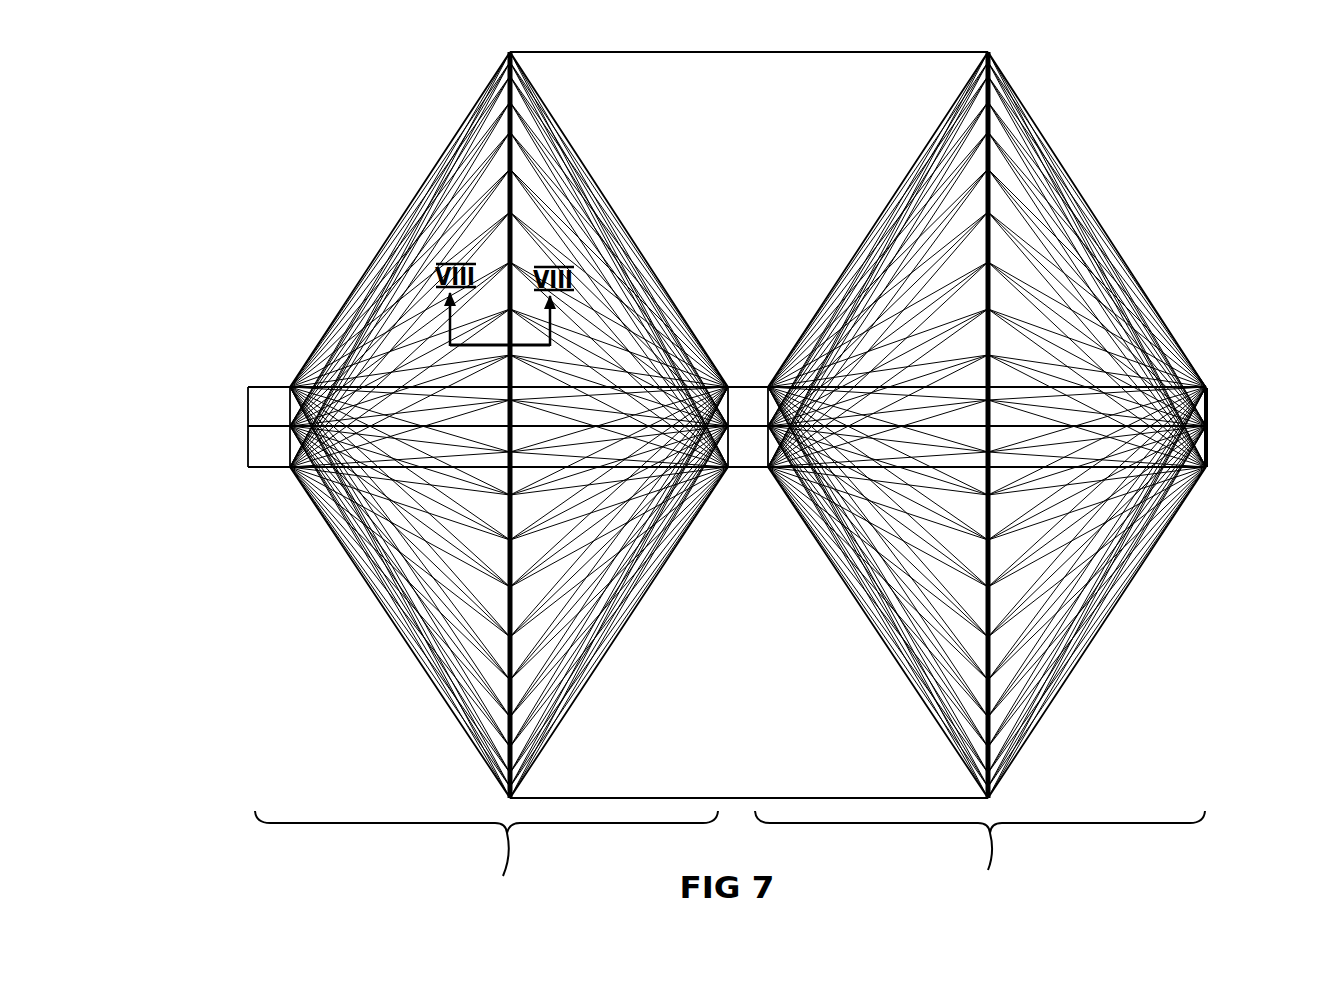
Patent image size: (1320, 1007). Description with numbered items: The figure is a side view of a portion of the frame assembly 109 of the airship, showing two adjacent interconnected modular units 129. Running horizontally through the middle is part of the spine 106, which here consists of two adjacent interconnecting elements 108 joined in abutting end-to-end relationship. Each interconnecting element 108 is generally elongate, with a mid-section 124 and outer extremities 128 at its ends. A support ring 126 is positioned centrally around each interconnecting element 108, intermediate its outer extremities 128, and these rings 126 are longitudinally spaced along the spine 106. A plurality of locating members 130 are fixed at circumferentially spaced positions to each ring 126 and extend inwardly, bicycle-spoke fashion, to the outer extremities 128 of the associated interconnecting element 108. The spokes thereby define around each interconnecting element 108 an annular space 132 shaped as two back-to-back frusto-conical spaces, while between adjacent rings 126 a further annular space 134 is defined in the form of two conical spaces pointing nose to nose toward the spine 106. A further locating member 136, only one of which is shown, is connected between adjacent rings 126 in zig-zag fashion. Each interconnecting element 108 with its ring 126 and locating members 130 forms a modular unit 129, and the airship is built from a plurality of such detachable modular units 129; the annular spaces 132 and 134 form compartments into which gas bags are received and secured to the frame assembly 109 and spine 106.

The spine 106 is at (1212, 405).
The interconnecting element 108 is at (335, 417).
The frame assembly 109 is at (495, 122).
The mid-section 124 is at (962, 415).
The support ring 126 is at (512, 180).
The outer extremity 128 is at (265, 472).
The modular unit 129 is at (730, 862).
The locating member 130 is at (412, 268).
The annular space 132 is at (574, 258).
The further annular space 134 is at (818, 183).
The further locating member 136 is at (714, 53).